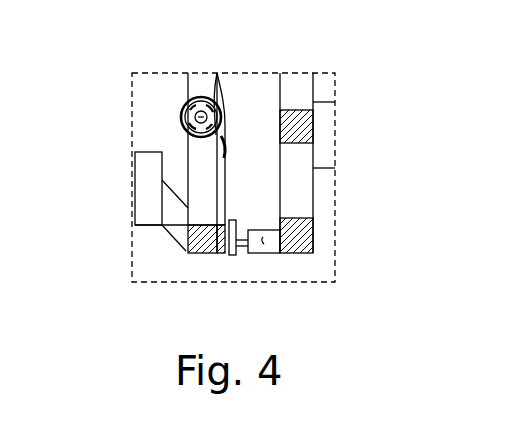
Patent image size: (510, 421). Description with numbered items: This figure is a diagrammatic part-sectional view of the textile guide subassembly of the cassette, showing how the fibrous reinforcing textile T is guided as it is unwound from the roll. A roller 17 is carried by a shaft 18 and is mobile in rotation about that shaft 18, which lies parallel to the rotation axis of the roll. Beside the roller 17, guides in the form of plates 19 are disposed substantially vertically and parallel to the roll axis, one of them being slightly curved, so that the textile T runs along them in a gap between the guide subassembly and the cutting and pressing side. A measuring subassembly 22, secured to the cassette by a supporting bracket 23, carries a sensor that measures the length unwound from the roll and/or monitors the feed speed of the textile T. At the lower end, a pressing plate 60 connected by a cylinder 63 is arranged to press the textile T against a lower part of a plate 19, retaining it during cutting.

The rollers 17 is at (203, 93).
The textile T is at (228, 143).
The shaft 18 is at (182, 118).
The plates 19 is at (213, 158).
The measuring subassembly 22 is at (156, 211).
The supporting bracket 23 is at (193, 232).
The pressing plates 60 is at (232, 255).
The cylinders 63 is at (265, 253).